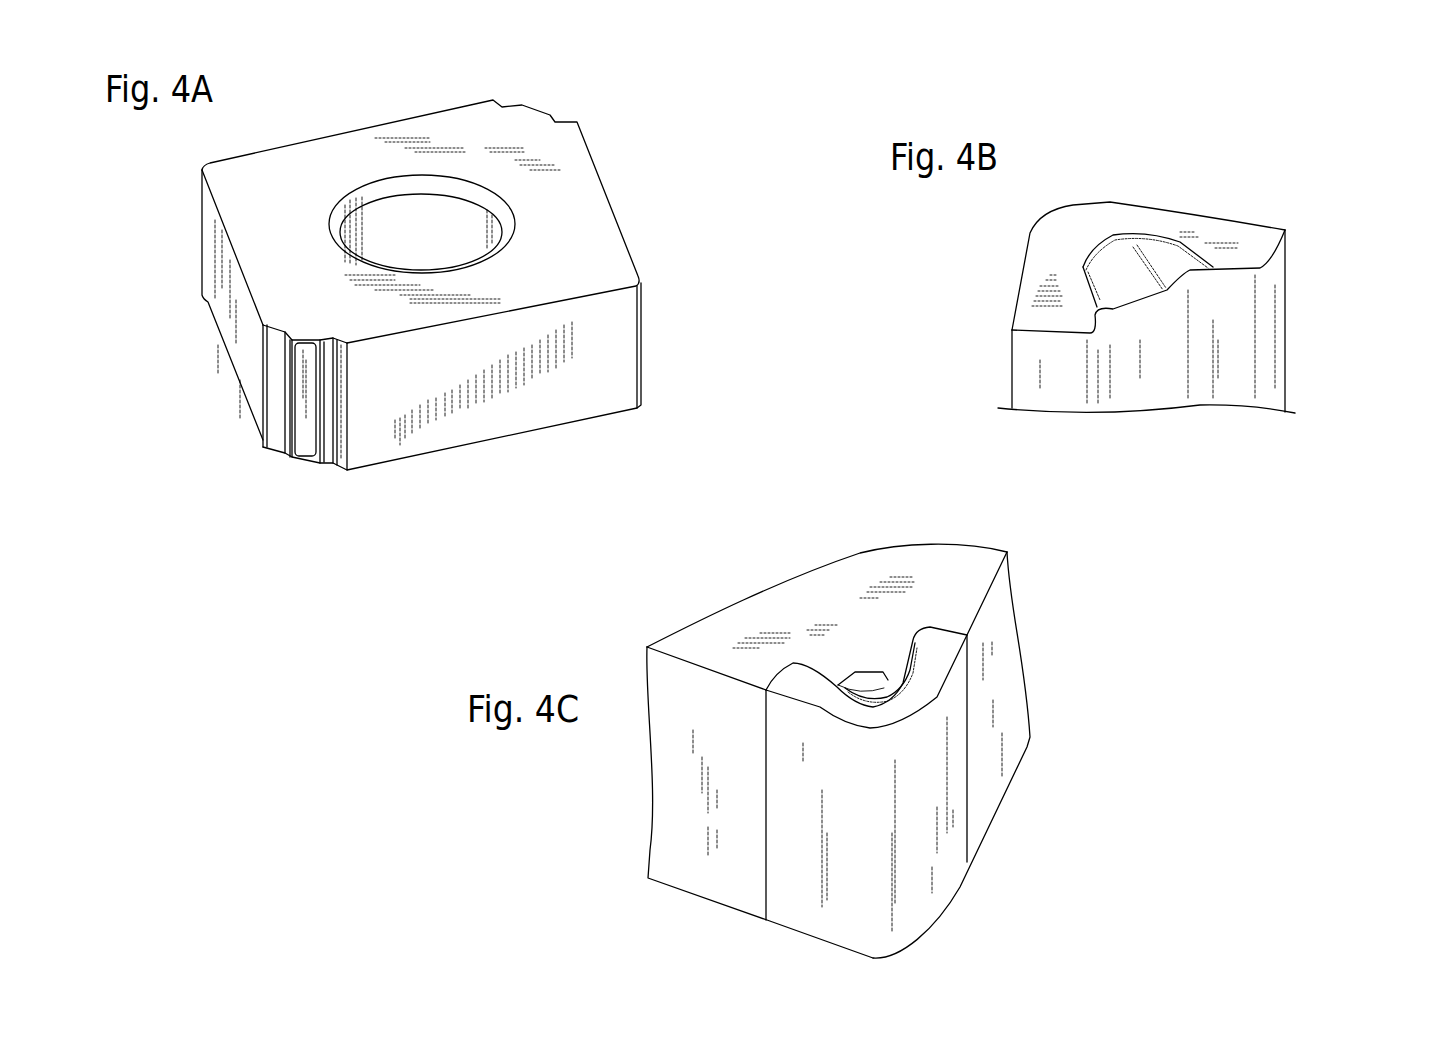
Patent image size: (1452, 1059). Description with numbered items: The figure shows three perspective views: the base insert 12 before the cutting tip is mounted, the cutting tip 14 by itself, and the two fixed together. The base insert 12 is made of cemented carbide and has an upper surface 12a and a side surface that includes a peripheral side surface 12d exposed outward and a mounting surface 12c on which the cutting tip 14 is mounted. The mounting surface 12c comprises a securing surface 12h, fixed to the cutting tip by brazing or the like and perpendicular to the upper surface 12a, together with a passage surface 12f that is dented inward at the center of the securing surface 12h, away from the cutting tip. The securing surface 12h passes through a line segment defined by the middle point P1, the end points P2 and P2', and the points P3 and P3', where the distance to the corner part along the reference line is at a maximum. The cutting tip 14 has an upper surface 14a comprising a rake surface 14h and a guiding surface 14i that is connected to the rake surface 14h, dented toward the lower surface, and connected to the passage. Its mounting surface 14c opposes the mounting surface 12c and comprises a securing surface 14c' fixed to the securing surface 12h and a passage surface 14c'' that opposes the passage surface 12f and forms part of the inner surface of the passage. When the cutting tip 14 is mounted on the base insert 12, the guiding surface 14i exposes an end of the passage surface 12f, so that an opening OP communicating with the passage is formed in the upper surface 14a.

In FIG. 4A, the base insert 12 is at (474, 486).
In FIG. 4A, the upper surface 12a is at (590, 195).
In FIG. 4C, the upper surface 12a is at (927, 593).
In FIG. 4A, the mounting surface 12c is at (172, 500).
In FIG. 4A, the peripheral side surface 12d is at (532, 428).
In FIG. 4A, the passage surface 12f is at (261, 399).
In FIG. 4A, the securing surface 12h is at (290, 448).
In FIG. 4A, the middle point P1 is at (305, 335).
In FIG. 4A, the end point P2 is at (227, 386).
In FIG. 4A, the end point P2' is at (369, 425).
In FIG. 4A, the maximum-distance point P3 is at (281, 356).
In FIG. 4A, the maximum-distance point P3' is at (360, 380).
In FIG. 4B, the cutting tip 14 is at (1146, 450).
In FIG. 4B, the upper surface 14a is at (1234, 104).
In FIG. 4B, the rake surface 14h is at (1077, 207).
In FIG. 4C, the rake surface 14h is at (900, 712).
In FIG. 4B, the guiding surface 14i is at (1157, 260).
In FIG. 4C, the guiding surface 14i is at (900, 670).
In FIG. 4B, the mounting surface 14c is at (1232, 345).
In FIG. 4B, the securing surface 14c' is at (1206, 295).
In FIG. 4B, the passage surface 14c'' is at (1208, 426).
In FIG. 4C, the opening OP is at (862, 687).